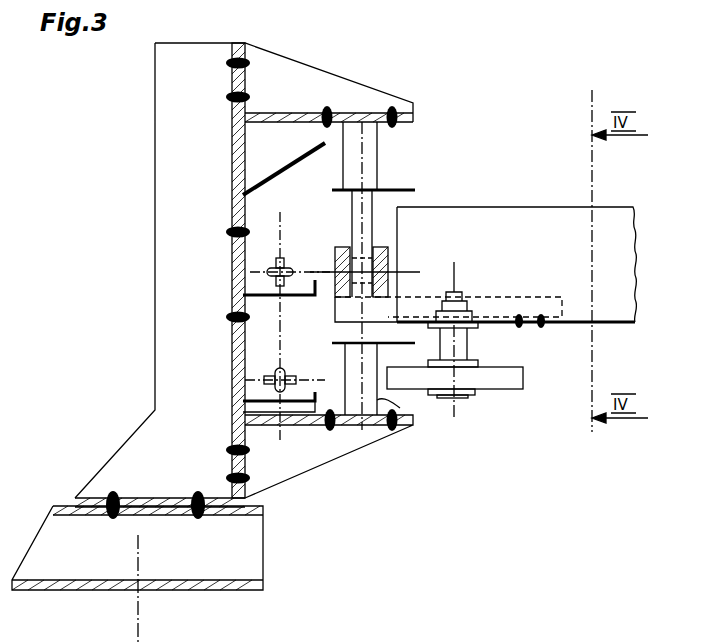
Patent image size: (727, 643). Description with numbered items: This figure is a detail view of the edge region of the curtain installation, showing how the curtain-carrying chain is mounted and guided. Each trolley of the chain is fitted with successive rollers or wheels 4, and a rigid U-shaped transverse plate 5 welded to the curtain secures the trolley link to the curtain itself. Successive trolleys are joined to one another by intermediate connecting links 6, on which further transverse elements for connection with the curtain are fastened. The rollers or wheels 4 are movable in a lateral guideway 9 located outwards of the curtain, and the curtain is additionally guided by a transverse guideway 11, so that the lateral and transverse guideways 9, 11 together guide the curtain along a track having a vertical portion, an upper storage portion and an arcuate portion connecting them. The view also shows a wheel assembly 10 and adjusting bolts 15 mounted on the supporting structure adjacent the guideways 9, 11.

The roller 4 is at (352, 226).
The U-shaped transverse plate 5 is at (552, 305).
The intermediate connecting link 6 is at (335, 263).
The lateral guideway 9 is at (345, 344).
The wheel 10 is at (495, 378).
The transverse guideway 11 is at (380, 400).
The adjusting bolts 15 is at (270, 264).